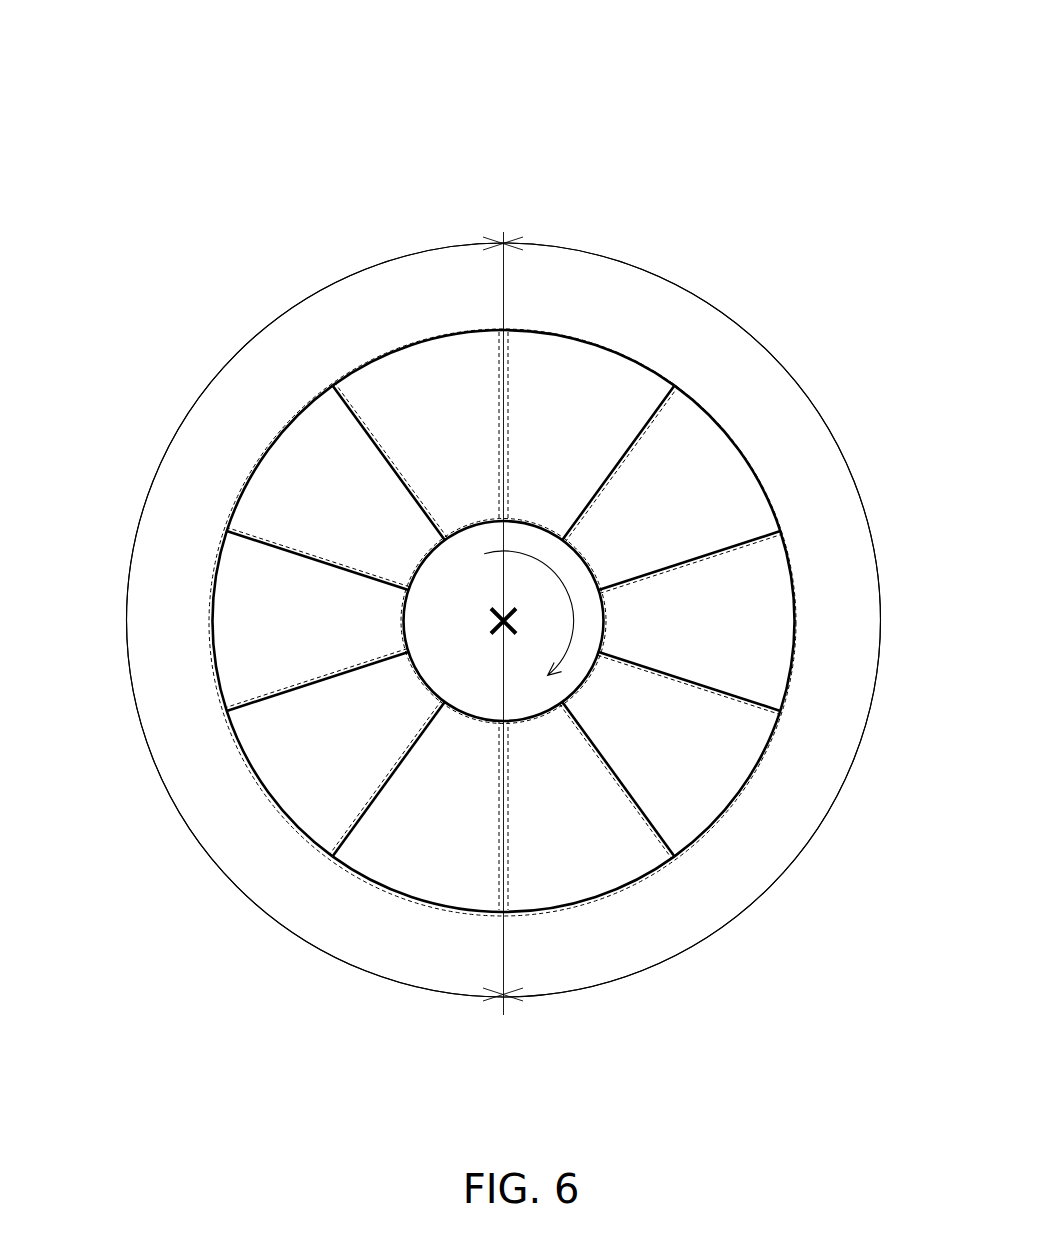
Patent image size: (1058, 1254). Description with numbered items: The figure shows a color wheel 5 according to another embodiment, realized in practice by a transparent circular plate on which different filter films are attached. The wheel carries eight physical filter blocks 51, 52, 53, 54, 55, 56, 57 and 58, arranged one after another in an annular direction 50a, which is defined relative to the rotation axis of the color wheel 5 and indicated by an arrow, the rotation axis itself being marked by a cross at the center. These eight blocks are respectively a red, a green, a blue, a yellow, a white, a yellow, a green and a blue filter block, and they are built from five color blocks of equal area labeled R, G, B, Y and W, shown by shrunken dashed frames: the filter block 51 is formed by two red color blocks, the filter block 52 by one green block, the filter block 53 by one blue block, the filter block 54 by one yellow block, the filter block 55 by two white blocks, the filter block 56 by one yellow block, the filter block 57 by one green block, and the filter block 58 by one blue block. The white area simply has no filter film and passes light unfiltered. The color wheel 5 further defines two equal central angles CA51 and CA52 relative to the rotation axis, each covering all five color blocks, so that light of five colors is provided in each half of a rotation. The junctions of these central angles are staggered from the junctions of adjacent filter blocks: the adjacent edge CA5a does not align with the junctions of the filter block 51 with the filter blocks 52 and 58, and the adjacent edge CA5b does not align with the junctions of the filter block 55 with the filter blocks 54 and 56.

The color wheel 5 is at (758, 141).
The annular direction 50a is at (503, 621).
The filter block 51 is at (333, 380).
The filter block 52 is at (783, 527).
The filter block 53 is at (785, 533).
The filter block 54 is at (783, 715).
The filter block 55 is at (333, 862).
The filter block 56 is at (224, 715).
The filter block 57 is at (222, 533).
The filter block 58 is at (328, 384).
The adjacent edge CA5a is at (487, 381).
The adjacent edge CA5b is at (487, 859).
The central angle CA51 is at (734, 620).
The central angle CA52 is at (273, 620).